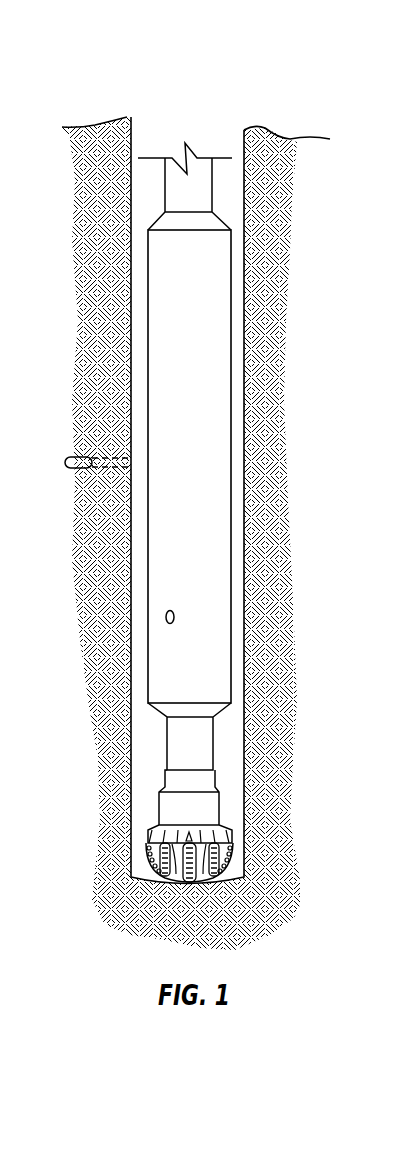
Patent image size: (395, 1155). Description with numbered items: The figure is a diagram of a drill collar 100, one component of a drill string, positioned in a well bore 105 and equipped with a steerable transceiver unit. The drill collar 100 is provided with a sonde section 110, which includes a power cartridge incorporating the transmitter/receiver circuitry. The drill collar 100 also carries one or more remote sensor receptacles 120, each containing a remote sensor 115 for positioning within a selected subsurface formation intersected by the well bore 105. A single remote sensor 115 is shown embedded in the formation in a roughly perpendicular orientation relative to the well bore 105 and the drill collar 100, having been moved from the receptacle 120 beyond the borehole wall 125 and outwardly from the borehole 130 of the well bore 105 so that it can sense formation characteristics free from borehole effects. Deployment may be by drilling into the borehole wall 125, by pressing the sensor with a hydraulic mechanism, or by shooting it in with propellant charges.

The drill collar 100 is at (288, 393).
The well bore 105 is at (160, 97).
The sonde section 110 is at (232, 504).
The remote sensor 115 is at (80, 459).
The remote sensor receptacle 120 is at (166, 615).
The borehole wall 125 is at (243, 128).
The borehole 130 is at (142, 125).